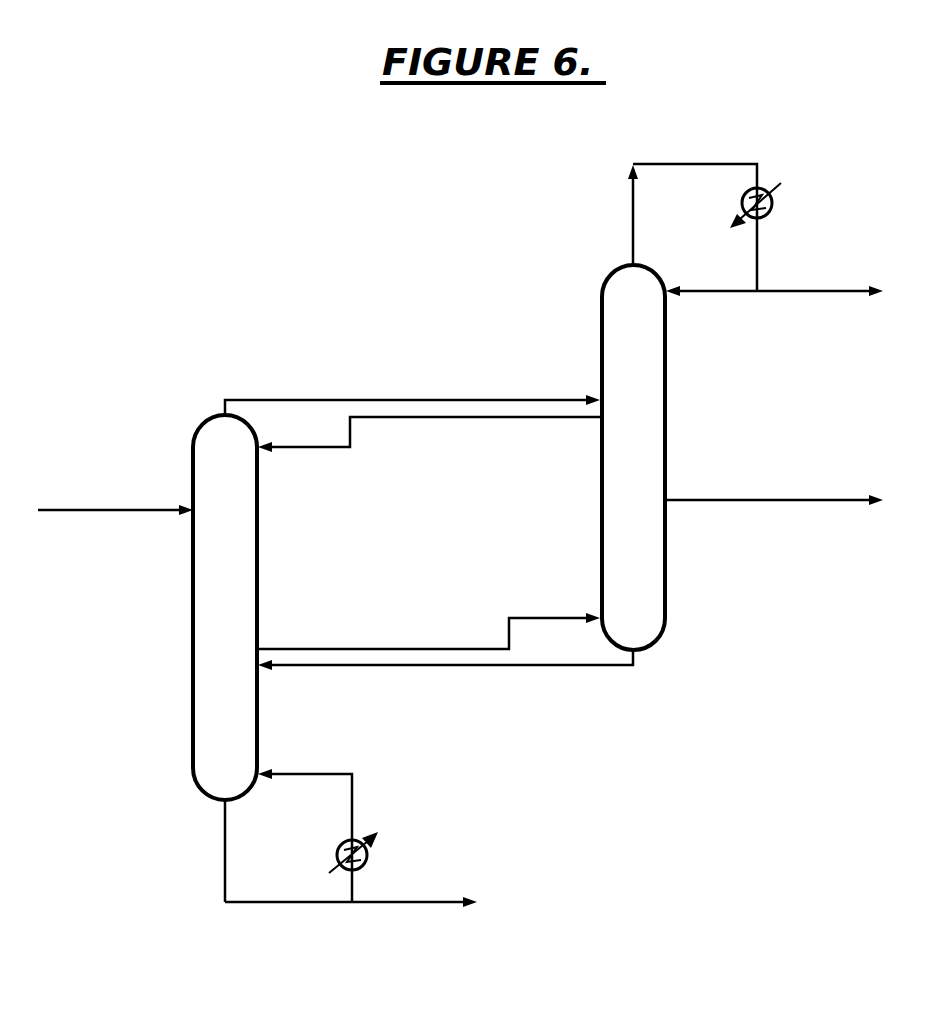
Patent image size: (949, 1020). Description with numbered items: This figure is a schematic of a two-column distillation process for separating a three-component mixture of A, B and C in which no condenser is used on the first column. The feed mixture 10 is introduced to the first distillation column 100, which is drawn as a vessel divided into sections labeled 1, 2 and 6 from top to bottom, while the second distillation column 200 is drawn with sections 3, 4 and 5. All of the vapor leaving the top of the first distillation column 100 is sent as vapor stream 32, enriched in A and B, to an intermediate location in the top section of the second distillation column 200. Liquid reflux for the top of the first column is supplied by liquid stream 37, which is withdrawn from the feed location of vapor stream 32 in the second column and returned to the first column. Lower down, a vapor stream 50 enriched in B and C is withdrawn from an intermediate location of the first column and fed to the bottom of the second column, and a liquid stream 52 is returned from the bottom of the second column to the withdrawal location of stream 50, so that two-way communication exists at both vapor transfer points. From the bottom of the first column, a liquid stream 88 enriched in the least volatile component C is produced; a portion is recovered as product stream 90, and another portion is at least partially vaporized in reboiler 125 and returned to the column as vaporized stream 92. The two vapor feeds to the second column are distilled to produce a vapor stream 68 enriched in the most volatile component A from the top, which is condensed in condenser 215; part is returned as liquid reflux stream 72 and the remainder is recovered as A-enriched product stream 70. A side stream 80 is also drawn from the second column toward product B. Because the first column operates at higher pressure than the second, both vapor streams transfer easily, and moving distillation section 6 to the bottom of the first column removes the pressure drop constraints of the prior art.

The first section of first column 1 is at (233, 486).
The second section of first column 2 is at (233, 602).
The third section of second column 3 is at (640, 352).
The fourth section of second column 4 is at (640, 469).
The fifth section of second column 5 is at (640, 580).
The distillation section 6 is at (233, 727).
The feed mixture 10 is at (88, 512).
The vapor stream 32 is at (533, 397).
The liquid stream 37 is at (530, 419).
The vapor stream 50 is at (527, 617).
The liquid stream 52 is at (525, 667).
The vapor stream 68 is at (671, 163).
The A-enriched product stream 70 is at (810, 288).
The liquid reflux stream 72 is at (704, 292).
The product B side stream 80 is at (763, 498).
The liquid stream 88 is at (224, 850).
The product stream 90 is at (403, 904).
The vaporized stream 92 is at (310, 773).
The first distillation column 100 is at (279, 533).
The reboiler 125 is at (378, 850).
The second distillation column 200 is at (667, 431).
The condenser 215 is at (781, 195).